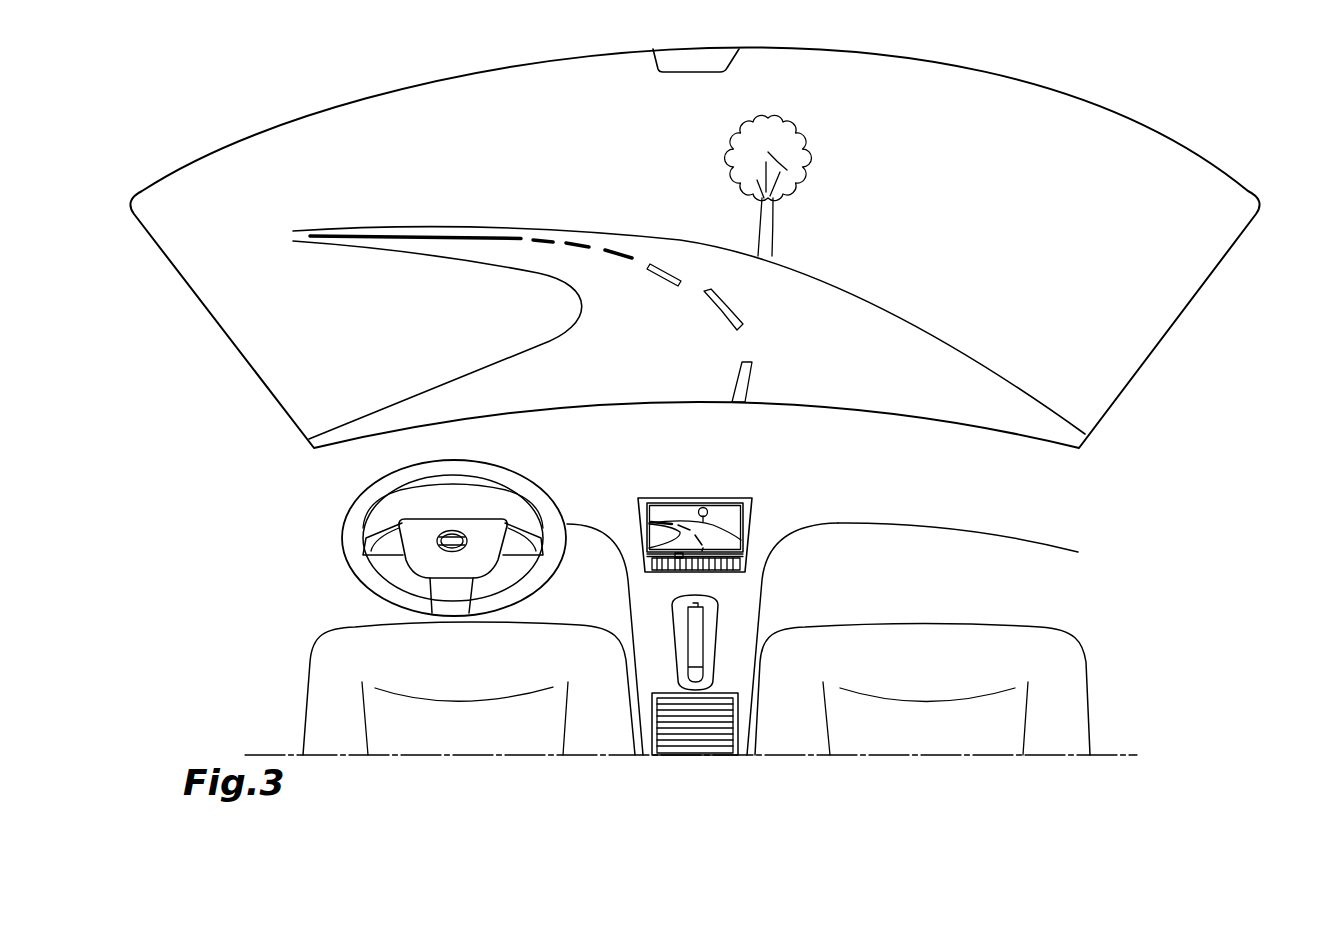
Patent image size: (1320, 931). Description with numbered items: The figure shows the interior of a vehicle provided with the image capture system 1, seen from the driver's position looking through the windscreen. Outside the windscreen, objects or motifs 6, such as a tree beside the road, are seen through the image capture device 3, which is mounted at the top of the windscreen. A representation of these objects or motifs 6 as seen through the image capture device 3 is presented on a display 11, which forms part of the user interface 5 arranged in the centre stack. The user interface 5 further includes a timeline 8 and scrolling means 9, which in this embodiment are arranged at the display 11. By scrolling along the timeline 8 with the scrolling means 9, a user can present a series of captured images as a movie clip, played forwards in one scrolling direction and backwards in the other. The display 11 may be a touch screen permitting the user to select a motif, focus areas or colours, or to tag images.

The image capture system 1 is at (1134, 537).
The image capture device 3 is at (669, 61).
The user interface 5 is at (723, 488).
The objects or motifs 6 is at (810, 189).
The timeline 8 is at (667, 572).
The scrolling means 9 is at (647, 555).
The display 11 is at (733, 520).